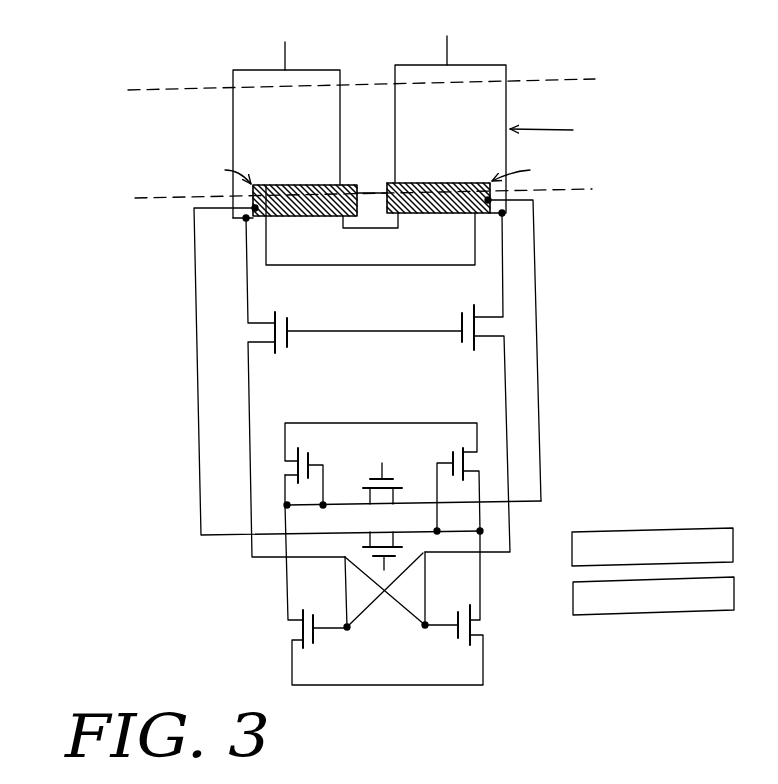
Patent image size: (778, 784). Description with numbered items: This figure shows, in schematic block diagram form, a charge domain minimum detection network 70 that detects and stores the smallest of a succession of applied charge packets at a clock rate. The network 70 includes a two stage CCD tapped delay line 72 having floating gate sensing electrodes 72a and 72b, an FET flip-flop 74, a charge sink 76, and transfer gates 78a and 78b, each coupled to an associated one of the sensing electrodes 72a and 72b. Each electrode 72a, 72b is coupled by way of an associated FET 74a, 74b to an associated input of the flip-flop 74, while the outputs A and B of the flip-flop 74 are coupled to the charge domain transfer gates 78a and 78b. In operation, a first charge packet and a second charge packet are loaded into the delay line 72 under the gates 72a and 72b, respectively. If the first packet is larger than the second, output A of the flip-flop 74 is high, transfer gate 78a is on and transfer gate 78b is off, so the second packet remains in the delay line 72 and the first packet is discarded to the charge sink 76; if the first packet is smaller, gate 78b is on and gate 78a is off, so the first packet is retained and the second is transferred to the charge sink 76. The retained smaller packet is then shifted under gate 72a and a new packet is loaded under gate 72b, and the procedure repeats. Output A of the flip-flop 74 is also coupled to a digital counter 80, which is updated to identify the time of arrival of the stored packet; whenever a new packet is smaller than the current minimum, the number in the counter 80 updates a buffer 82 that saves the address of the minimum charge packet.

The minimum detection network 70 is at (37, 662).
The two stage CCD tapped delay line 72 is at (88, 72).
The floating gate sensing electrode 72a is at (324, 70).
The floating gate sensing electrode 72b is at (484, 65).
The FET flip-flop 74 is at (88, 240).
The FET 74a is at (283, 357).
The FET 74b is at (461, 350).
The charge sink 76 is at (372, 265).
The transfer gate 78a is at (353, 185).
The transfer gate 78b is at (392, 183).
The digital counter 80 is at (683, 612).
The buffer 82 is at (672, 528).